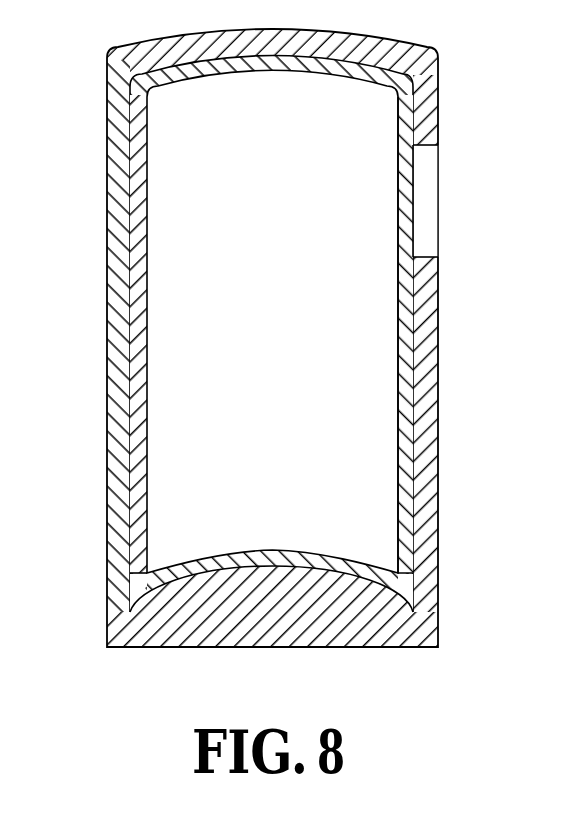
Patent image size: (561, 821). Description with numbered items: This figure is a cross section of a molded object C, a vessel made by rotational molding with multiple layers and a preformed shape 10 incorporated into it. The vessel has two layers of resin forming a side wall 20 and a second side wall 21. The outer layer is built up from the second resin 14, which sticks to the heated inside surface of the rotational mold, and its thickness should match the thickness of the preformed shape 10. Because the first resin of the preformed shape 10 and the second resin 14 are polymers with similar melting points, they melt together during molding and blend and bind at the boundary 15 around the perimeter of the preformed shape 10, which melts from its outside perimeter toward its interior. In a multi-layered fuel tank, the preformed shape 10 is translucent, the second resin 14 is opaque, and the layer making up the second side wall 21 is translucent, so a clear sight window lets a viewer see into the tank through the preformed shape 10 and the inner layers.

The molded object C is at (290, 338).
The preformed shape 10 is at (428, 208).
The second resin 14 is at (432, 362).
The boundary 15 is at (437, 148).
The side wall 20 is at (410, 446).
The second side wall 21 is at (404, 532).